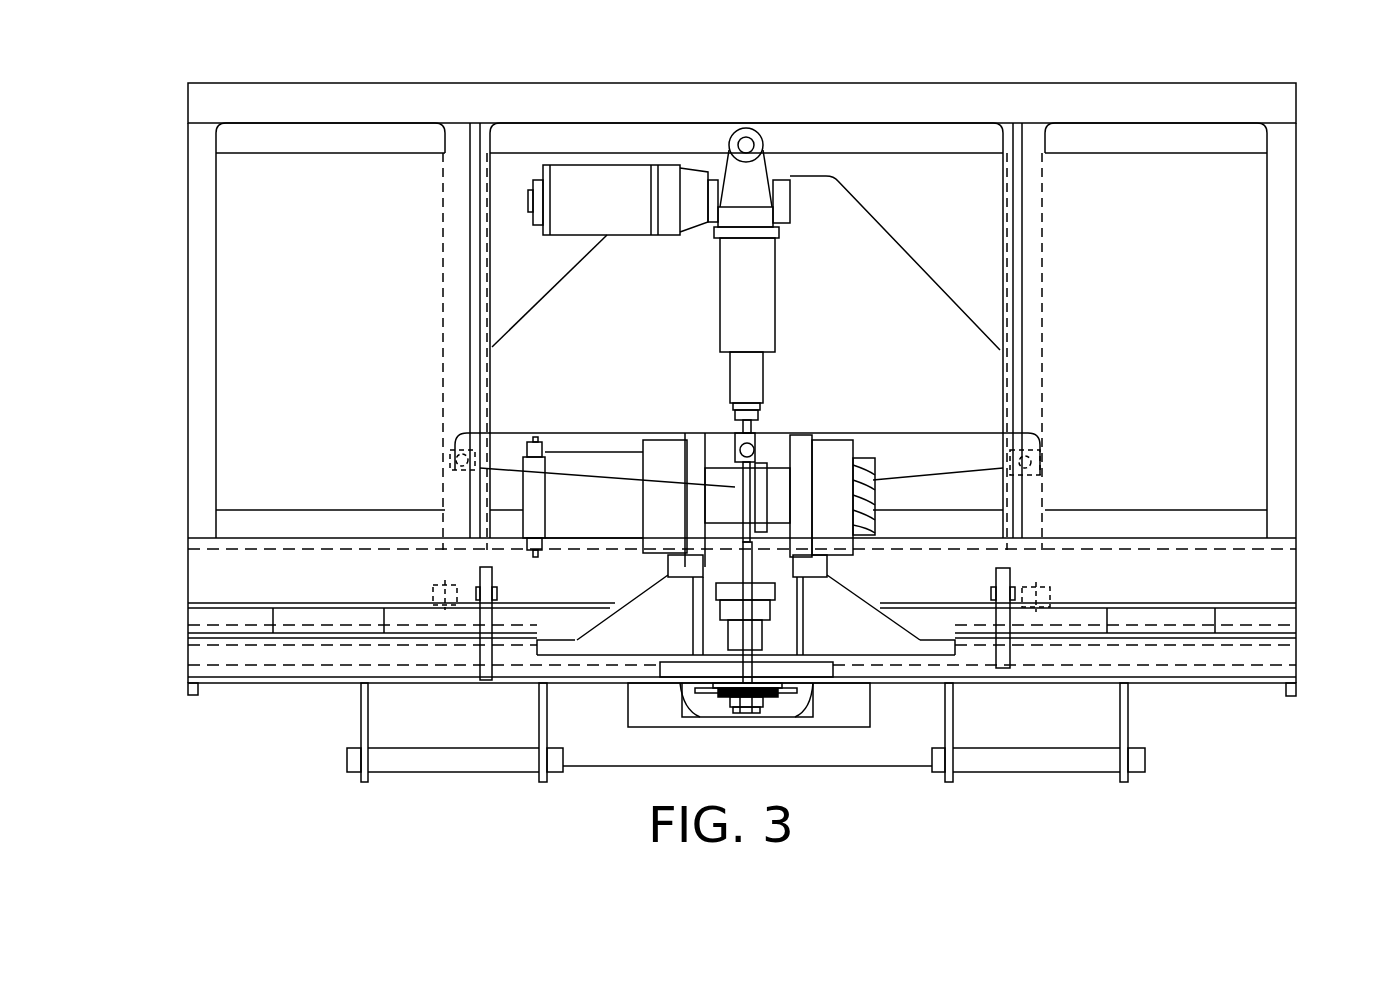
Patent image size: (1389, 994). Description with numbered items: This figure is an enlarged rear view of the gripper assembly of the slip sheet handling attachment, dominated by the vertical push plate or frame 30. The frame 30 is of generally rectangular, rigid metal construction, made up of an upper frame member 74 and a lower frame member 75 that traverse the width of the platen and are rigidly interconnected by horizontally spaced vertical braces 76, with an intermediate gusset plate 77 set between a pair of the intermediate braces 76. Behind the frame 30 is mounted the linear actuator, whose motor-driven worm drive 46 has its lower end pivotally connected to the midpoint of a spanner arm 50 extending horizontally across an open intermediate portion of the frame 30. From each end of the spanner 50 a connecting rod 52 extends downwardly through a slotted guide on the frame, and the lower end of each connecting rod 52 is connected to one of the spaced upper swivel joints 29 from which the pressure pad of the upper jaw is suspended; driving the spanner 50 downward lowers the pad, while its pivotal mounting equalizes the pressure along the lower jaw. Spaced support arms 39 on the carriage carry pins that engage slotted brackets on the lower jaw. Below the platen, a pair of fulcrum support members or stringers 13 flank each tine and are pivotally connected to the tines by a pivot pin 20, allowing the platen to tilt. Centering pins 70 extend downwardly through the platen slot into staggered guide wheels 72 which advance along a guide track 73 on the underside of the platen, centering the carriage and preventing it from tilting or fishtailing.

The upper frame member 74 is at (205, 98).
The vertical braces 76 is at (203, 228).
The push plate or frame 30 is at (186, 337).
The lower frame member 75 is at (205, 519).
The intermediate gusset plate 77 is at (548, 268).
The motor-driven worm drive 46 is at (762, 317).
The spanner arm 50 is at (570, 440).
The connecting rod 52 is at (447, 478).
The upper swivel joints 29 is at (433, 595).
The support arms 39 is at (485, 633).
The fulcrum support members or stringers 13 is at (361, 727).
The pivot pin 20 is at (347, 762).
The guide track 73 is at (700, 690).
The guide wheels 72 is at (722, 695).
The centering pins 70 is at (770, 683).